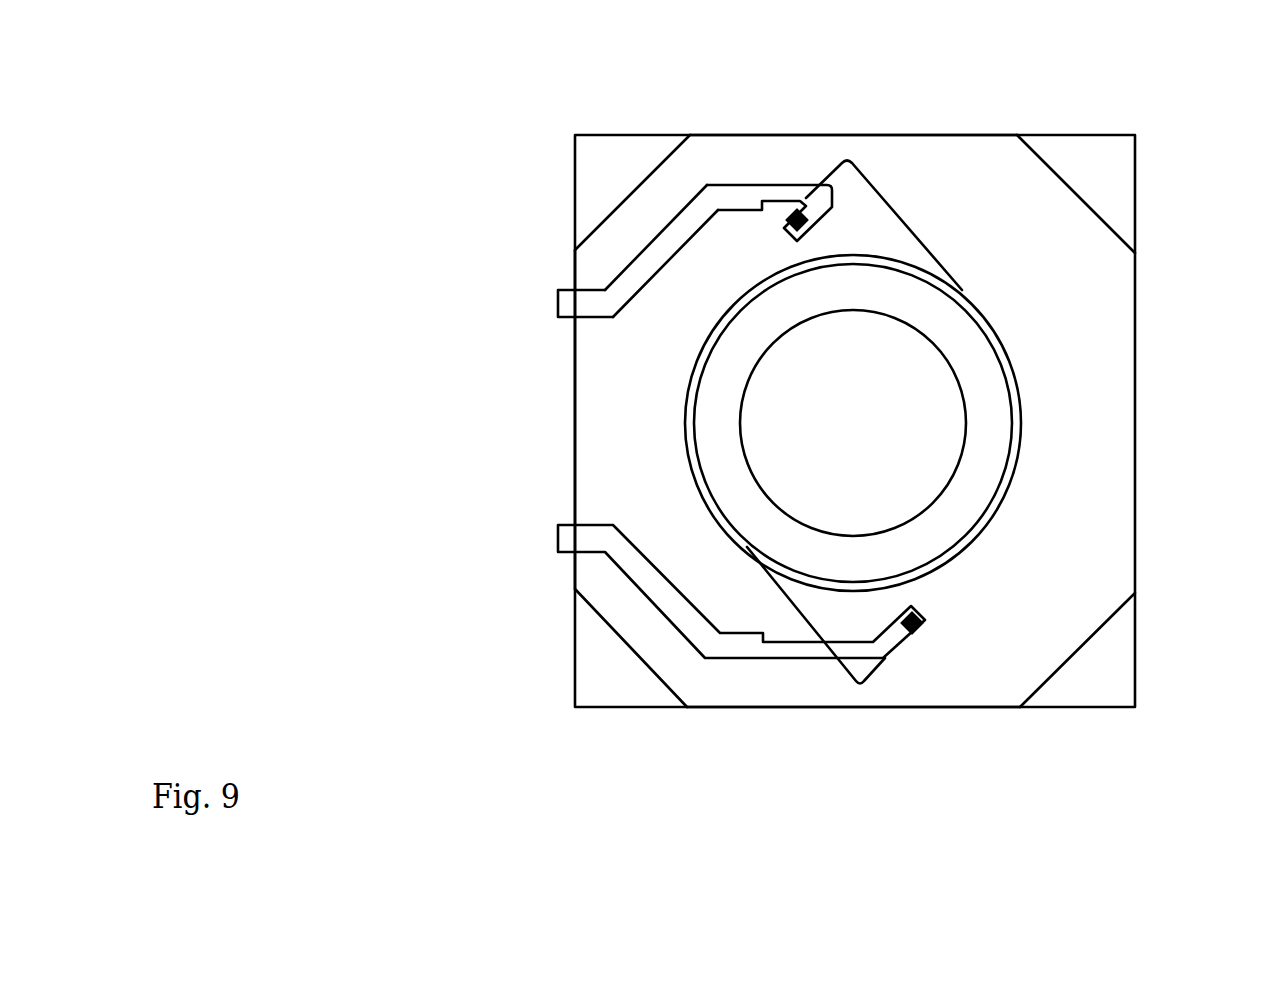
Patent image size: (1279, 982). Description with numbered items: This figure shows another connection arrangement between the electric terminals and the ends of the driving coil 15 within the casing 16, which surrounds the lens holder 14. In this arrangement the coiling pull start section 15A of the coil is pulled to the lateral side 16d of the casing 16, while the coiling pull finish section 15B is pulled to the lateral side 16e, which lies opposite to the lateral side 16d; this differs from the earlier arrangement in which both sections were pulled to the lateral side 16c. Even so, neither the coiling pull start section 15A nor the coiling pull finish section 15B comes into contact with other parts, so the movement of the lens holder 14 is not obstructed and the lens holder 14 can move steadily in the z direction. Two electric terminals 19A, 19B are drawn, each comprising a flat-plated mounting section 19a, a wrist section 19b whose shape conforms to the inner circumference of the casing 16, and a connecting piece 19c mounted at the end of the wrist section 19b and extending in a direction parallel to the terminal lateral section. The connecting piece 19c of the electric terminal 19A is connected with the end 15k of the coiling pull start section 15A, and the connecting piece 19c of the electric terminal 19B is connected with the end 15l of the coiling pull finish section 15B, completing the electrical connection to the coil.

The lens holder 14 is at (980, 367).
The driving coil 15 is at (928, 422).
The coiling pull start section 15A is at (907, 220).
The coiling pull finish section 15B is at (797, 607).
The end of the coiling pull start section 15k is at (783, 223).
The end of the coiling pull finish section 15l is at (927, 630).
The casing 16 is at (776, 432).
The lateral side 16c is at (573, 420).
The lateral side 16d is at (820, 135).
The lateral side 16e is at (850, 710).
The electric terminal 19A is at (624, 204).
The electric terminal 19B is at (590, 530).
The flat-plated mounting section 19a is at (560, 292).
The wrist section 19b is at (663, 247).
The connecting piece 19c is at (823, 207).